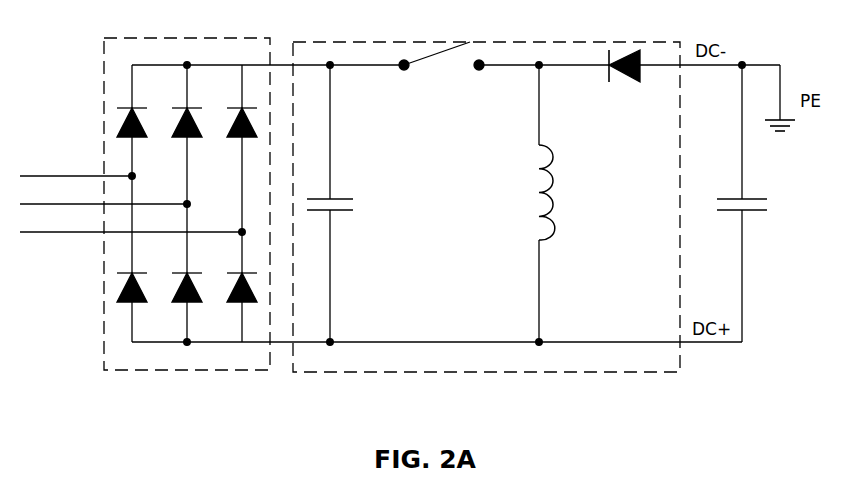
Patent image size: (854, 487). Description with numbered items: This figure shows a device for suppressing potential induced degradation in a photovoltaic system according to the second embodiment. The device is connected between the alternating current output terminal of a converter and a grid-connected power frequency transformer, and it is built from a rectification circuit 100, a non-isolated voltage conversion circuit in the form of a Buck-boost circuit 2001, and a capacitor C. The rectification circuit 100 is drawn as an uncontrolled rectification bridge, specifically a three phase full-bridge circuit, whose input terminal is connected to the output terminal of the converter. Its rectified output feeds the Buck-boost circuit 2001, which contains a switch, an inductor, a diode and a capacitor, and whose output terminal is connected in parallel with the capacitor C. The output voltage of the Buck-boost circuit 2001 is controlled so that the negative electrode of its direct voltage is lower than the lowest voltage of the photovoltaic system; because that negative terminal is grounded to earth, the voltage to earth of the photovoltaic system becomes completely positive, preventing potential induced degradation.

The rectification circuit 100 is at (145, 193).
The Buck-boost circuit 2001 is at (486, 195).
The capacitor C is at (755, 202).